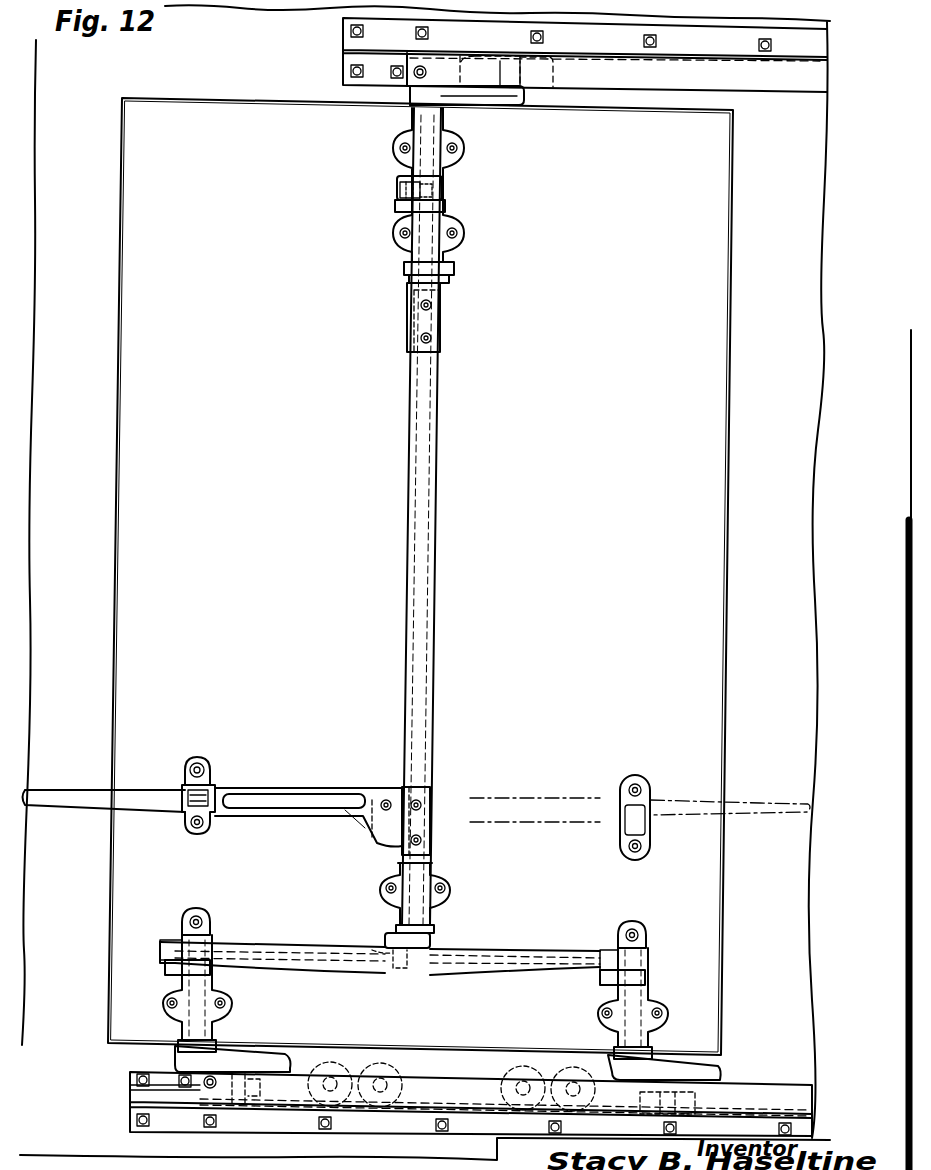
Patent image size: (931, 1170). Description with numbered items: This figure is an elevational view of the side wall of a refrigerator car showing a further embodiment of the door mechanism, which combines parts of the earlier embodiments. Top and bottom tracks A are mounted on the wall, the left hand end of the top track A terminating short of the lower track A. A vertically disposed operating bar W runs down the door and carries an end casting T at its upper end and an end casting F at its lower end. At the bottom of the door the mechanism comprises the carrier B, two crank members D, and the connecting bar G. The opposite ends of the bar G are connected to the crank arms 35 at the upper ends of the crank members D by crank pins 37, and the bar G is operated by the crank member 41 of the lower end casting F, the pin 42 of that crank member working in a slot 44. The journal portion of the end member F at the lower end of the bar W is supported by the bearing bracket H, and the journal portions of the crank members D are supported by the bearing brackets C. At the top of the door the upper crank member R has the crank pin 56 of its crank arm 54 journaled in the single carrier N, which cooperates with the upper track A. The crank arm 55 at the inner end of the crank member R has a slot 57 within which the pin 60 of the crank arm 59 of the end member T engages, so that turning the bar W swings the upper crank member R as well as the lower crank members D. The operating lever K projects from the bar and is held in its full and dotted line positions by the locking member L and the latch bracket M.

The track A is at (753, 62).
The carrier B is at (478, 1068).
The bearing bracket C is at (222, 998).
The crank member D is at (185, 1058).
The end casting F is at (430, 818).
The connecting bar G is at (540, 967).
The bearing bracket H is at (446, 882).
The operating lever K is at (280, 789).
The locking member L is at (210, 775).
The latch bracket M is at (642, 785).
The carrier N is at (557, 78).
The upper crank member R is at (492, 104).
The end casting T is at (408, 346).
The operating bar W is at (435, 478).
The crank arm 35 is at (168, 968).
The crank pin 37 is at (168, 952).
The crank member 41 is at (430, 945).
The pin 42 is at (388, 953).
The slot 44 is at (398, 968).
The crank arm 54 is at (495, 99).
The crank arm 55 is at (400, 178).
The crank pin 56 is at (498, 70).
The slot 57 is at (400, 190).
The crank arm 59 is at (438, 205).
The pin 60 is at (400, 197).